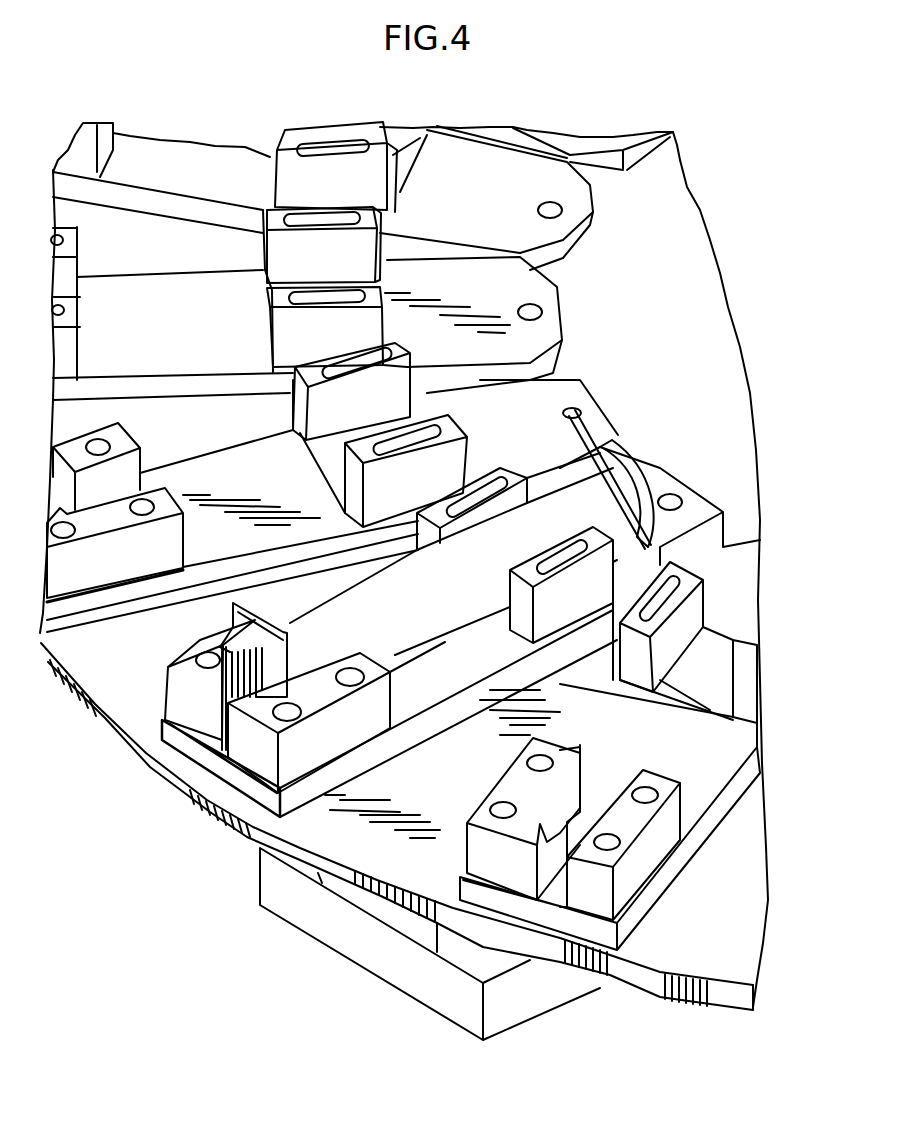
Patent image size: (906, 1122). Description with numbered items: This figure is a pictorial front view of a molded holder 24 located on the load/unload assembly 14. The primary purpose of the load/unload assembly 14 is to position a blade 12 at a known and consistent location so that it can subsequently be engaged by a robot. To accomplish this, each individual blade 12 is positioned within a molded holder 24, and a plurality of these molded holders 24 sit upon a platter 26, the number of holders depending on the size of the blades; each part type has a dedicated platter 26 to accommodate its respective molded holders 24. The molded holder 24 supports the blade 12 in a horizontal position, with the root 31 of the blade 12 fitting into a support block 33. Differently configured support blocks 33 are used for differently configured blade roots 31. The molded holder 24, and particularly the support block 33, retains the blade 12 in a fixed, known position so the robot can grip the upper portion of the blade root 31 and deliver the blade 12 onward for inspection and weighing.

The blade 12 is at (450, 605).
The load/unload assembly 14 is at (187, 827).
The molded holder 24 is at (433, 723).
The platter 26 is at (147, 757).
The root 31 is at (227, 648).
The support block 33 is at (180, 693).